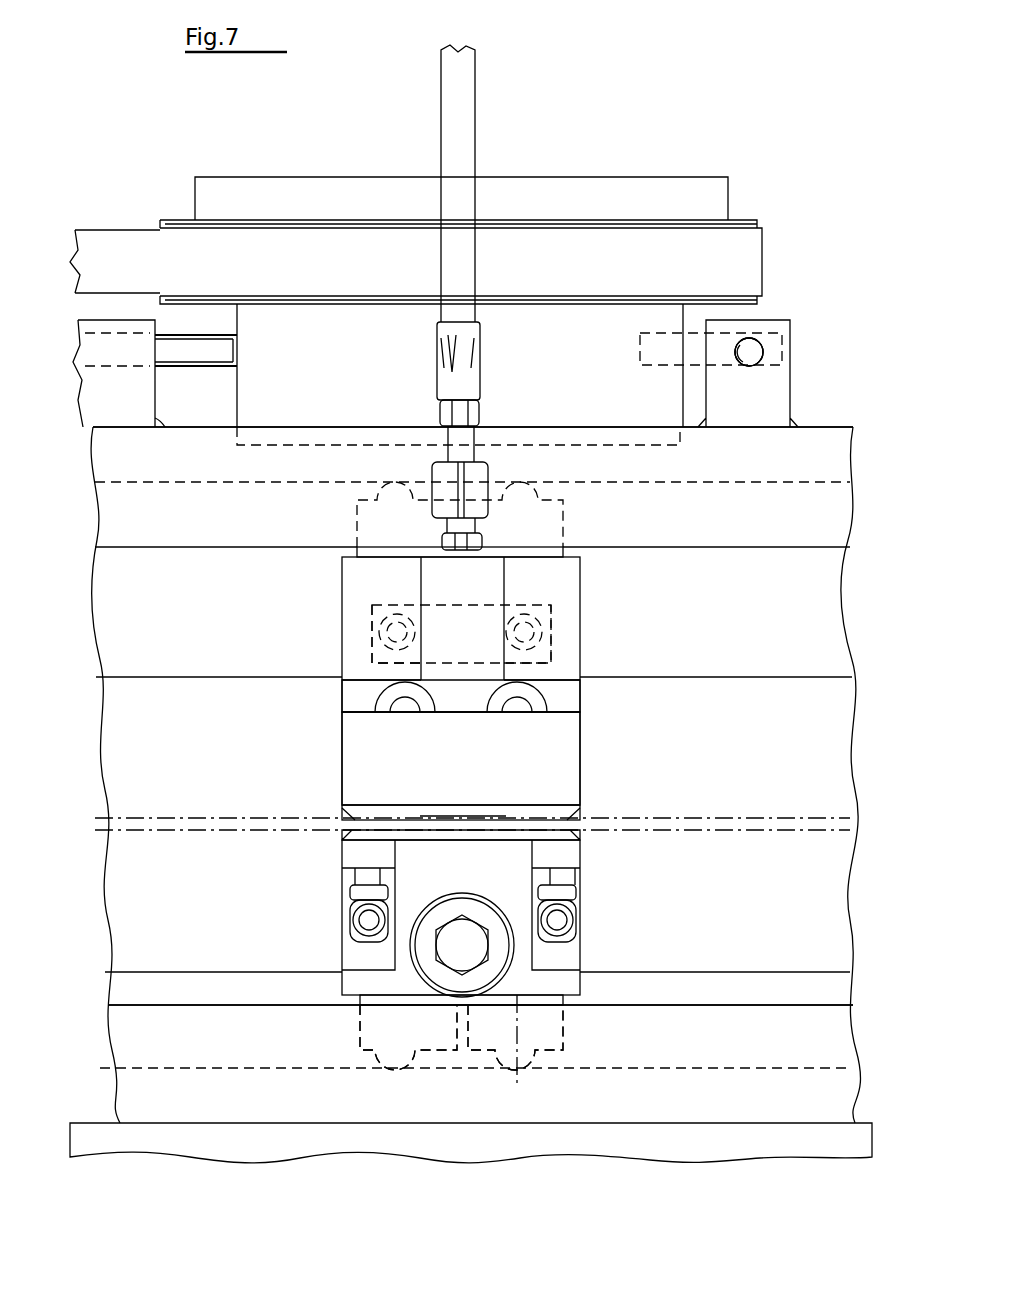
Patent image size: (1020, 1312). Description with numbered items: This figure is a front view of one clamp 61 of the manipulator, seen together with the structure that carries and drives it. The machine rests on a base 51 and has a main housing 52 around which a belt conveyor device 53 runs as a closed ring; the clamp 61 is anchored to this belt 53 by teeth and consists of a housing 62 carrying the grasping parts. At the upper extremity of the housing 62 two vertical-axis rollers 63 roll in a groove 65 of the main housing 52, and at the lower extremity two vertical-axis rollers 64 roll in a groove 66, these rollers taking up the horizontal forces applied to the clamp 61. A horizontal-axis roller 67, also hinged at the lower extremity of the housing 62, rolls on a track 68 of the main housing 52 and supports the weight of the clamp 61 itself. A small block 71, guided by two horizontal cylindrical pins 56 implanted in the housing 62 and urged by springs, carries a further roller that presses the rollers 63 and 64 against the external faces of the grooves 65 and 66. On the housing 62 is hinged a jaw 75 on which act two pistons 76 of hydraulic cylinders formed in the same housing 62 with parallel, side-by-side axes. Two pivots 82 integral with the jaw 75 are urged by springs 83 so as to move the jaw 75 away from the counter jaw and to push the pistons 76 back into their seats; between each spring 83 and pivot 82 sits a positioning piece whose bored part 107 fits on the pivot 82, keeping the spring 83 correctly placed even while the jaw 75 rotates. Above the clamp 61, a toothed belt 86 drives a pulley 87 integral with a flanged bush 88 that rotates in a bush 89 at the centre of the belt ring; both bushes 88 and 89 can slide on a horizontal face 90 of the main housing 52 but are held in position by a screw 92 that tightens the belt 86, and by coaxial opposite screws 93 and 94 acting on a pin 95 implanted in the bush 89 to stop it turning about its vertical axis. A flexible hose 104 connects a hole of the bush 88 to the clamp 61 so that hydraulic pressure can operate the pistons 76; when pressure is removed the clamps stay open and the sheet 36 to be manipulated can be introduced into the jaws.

The sheet to be manipulated 36 is at (825, 827).
The base 51 is at (92, 1128).
The main housing 52 is at (825, 452).
The belt conveyor device 53 is at (785, 715).
The horizontal cylindrical pins 56 is at (392, 630).
The clamp 61 is at (596, 756).
The housing 62 is at (355, 696).
The rollers 63 is at (358, 520).
The rollers 64 is at (378, 1026).
The groove 65 is at (190, 487).
The groove 66 is at (195, 1068).
The horizontal-axis roller 67 is at (452, 908).
The track 68 is at (720, 1005).
The small block 71 is at (545, 612).
The jaw 75 is at (358, 770).
The pistons 76 is at (410, 704).
The pivots 82 is at (365, 880).
The springs 83 is at (362, 930).
The toothed belt 86 is at (108, 245).
The pulley 87 is at (170, 218).
The flanged bush 88 is at (275, 190).
The bush 89 is at (265, 386).
The horizontal face 90 is at (582, 442).
The screw 92 is at (183, 348).
The screw 93 is at (757, 345).
The screw 94 is at (749, 352).
The pin 95 is at (772, 352).
The flexible hose 104 is at (468, 136).
The bored part 107 is at (358, 895).